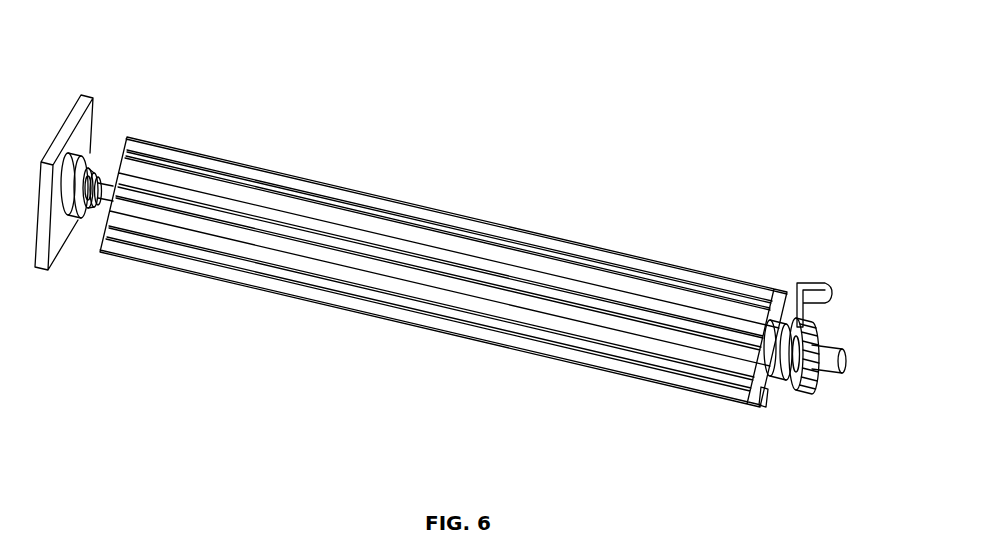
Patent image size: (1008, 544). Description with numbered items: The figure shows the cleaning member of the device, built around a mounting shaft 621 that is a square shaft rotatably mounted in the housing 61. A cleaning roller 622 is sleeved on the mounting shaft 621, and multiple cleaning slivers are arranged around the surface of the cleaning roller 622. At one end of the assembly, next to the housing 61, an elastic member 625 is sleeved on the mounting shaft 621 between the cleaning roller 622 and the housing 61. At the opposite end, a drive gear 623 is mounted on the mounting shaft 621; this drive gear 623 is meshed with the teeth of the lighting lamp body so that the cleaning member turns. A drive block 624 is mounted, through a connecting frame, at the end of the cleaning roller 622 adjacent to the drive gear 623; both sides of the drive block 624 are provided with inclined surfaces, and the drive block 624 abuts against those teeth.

The housing 61 is at (76, 95).
The mounting shaft 621 is at (100, 167).
The cleaning roller 622 is at (383, 197).
The drive gear 623 is at (803, 392).
The drive block 624 is at (813, 290).
The elastic member 625 is at (98, 206).